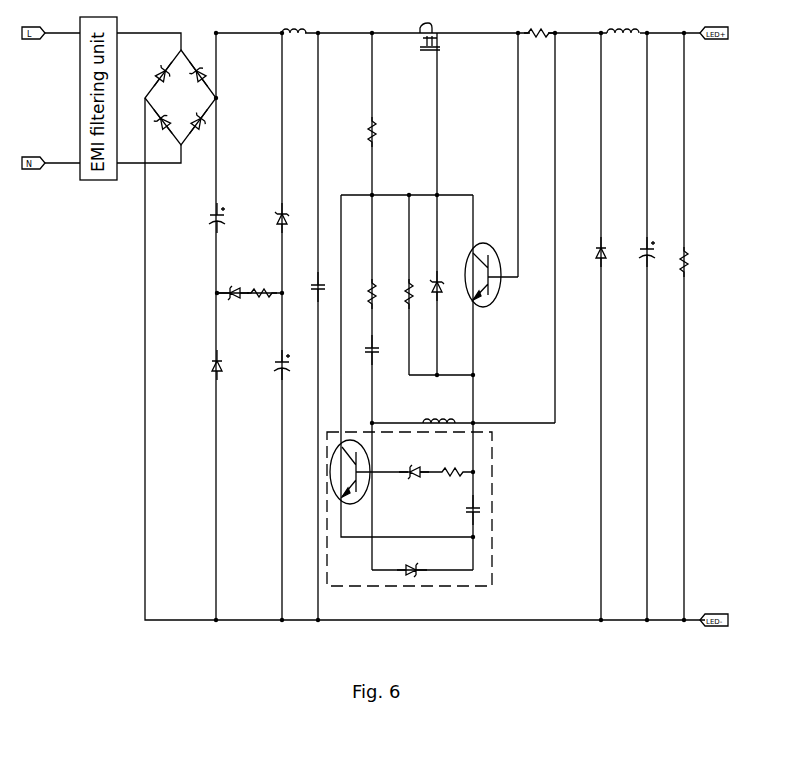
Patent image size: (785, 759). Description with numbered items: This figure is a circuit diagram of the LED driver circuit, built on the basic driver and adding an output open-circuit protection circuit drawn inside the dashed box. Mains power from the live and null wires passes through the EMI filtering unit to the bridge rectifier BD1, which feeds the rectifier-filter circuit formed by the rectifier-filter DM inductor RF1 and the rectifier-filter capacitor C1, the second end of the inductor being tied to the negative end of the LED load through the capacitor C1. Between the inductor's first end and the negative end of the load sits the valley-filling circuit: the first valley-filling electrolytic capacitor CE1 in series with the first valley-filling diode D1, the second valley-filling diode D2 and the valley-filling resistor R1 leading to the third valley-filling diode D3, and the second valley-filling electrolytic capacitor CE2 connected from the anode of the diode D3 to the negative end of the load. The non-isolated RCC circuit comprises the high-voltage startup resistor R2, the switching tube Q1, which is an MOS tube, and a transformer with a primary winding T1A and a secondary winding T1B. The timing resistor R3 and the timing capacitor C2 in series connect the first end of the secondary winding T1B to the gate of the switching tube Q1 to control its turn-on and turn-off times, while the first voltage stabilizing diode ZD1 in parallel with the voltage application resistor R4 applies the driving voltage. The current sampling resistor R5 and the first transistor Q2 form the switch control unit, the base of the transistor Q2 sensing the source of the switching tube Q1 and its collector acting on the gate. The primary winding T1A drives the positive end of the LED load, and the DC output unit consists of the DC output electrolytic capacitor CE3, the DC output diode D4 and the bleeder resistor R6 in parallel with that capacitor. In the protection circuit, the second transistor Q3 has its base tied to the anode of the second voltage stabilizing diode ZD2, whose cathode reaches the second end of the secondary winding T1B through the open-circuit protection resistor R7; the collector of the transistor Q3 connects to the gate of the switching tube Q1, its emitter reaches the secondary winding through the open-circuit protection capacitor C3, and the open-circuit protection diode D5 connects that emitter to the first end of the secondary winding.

The bridge rectifier BD1 is at (180, 106).
The rectifier-filter DM inductor RF1 is at (294, 40).
The high-voltage startup resistor R2 is at (366, 132).
The switching tube Q1 is at (430, 43).
The current sampling resistor R5 is at (539, 42).
The primary winding T1A is at (623, 42).
The first valley-filling electrolytic capacitor CE1 is at (207, 218).
The third valley-filling diode D3 is at (276, 218).
The rectifier-filter capacitor C1 is at (312, 287).
The second valley-filling diode D2 is at (234, 303).
The valley-filling resistor R1 is at (262, 304).
The first valley-filling diode D1 is at (210, 365).
The second valley-filling electrolytic capacitor CE2 is at (273, 365).
The timing resistor R3 is at (365, 294).
The voltage application resistor R4 is at (402, 294).
The first voltage stabilizing diode ZD1 is at (431, 289).
The first transistor Q2 is at (491, 275).
The timing capacitor C2 is at (366, 350).
The secondary winding T1B is at (439, 412).
The second transistor Q3 is at (409, 509).
The second voltage stabilizing diode ZD2 is at (414, 482).
The open-circuit protection resistor R7 is at (446, 484).
The open-circuit protection capacitor C3 is at (480, 510).
The open-circuit protection diode D5 is at (412, 563).
The DC output diode D4 is at (593, 252).
The DC output electrolytic capacitor CE3 is at (638, 252).
The bleeder resistor R6 is at (691, 262).